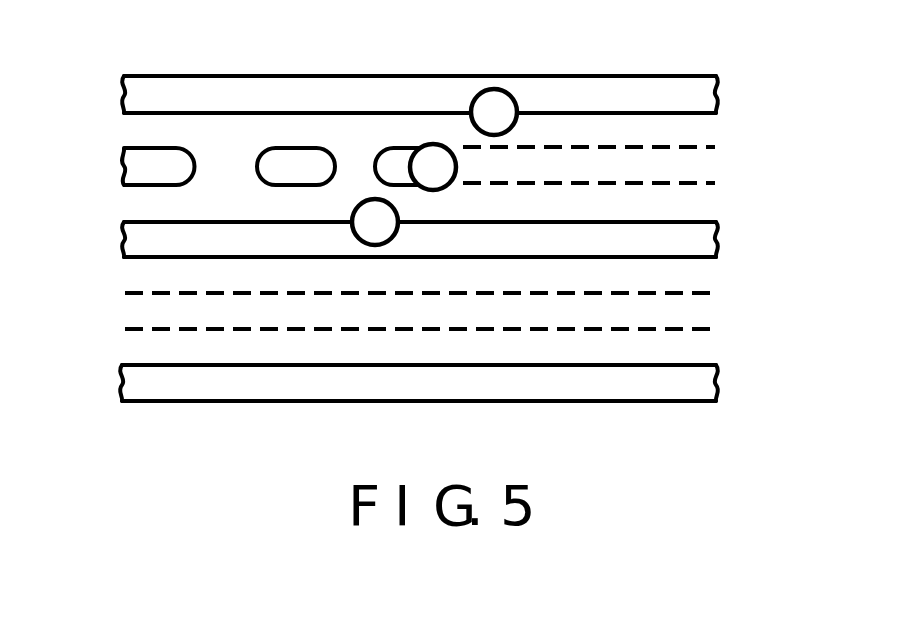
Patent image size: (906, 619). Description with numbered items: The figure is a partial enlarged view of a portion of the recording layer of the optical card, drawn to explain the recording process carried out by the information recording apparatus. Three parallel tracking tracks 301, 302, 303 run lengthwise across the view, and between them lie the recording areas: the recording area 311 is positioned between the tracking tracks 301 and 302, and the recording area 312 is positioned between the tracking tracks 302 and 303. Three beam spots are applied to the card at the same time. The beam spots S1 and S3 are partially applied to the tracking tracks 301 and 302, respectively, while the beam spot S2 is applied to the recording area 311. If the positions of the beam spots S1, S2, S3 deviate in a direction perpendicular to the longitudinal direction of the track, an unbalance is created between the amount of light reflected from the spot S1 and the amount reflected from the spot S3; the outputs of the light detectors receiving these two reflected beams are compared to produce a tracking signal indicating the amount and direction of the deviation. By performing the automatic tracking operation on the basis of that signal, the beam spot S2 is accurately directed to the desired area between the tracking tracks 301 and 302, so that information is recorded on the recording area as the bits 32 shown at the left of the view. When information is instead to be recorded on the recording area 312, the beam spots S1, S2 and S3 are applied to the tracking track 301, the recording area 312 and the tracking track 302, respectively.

The tracking track 301 is at (720, 88).
The tracking track 302 is at (720, 236).
The tracking track 303 is at (720, 382).
The recording area 311 is at (727, 118).
The recording area 312 is at (727, 265).
The bits 32 is at (140, 163).
The beam spot S1 is at (498, 88).
The beam spot S2 is at (433, 146).
The beam spot S3 is at (367, 200).